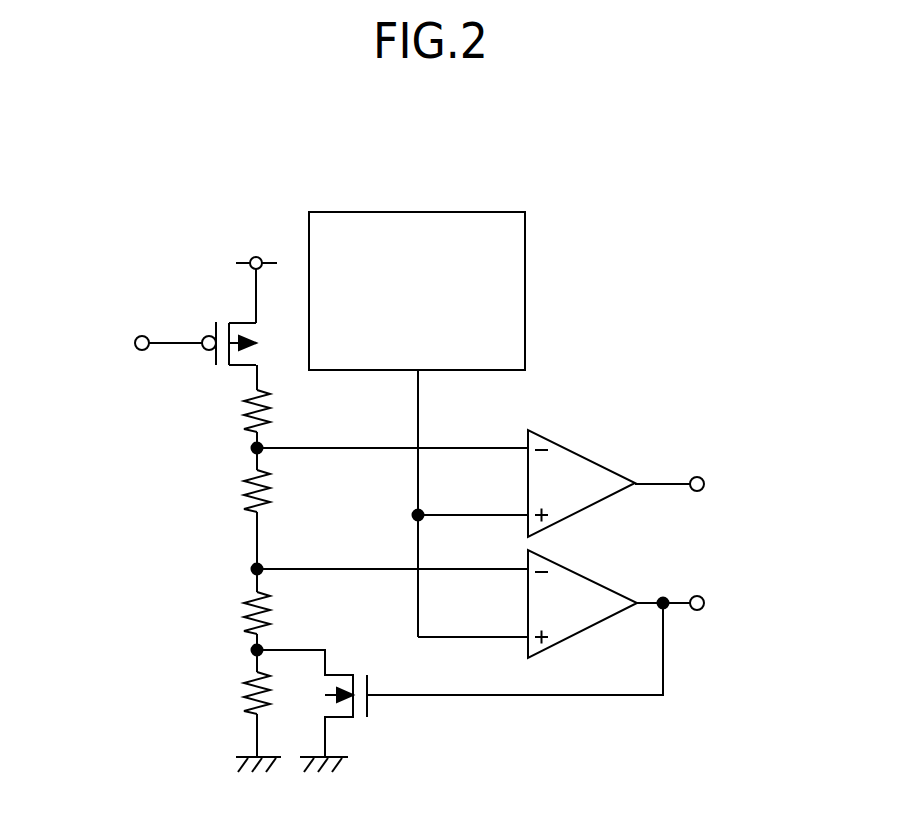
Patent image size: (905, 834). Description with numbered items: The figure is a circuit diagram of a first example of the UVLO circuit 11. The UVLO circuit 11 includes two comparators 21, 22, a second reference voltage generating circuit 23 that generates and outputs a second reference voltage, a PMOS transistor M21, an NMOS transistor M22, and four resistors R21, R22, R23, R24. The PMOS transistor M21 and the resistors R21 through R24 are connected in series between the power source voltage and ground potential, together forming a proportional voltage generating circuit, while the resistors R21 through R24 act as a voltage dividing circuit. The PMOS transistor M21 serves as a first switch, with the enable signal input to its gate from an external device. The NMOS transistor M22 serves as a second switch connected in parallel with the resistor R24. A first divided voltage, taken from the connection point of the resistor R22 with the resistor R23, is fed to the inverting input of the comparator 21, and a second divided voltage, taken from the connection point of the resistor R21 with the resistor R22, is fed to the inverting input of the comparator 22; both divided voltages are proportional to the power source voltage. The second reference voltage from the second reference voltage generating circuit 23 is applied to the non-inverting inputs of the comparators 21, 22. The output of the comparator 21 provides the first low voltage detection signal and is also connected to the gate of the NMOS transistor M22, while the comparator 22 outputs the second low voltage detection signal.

The UVLO circuit 11 is at (700, 362).
The comparator 21 is at (582, 577).
The comparator 22 is at (583, 456).
The second reference voltage generating circuit 23 is at (418, 212).
The PMOS transistor M21 is at (225, 328).
The NMOS transistor M22 is at (322, 701).
The resistor R21 is at (225, 411).
The resistor R22 is at (225, 491).
The resistor R23 is at (225, 613).
The resistor R24 is at (225, 693).